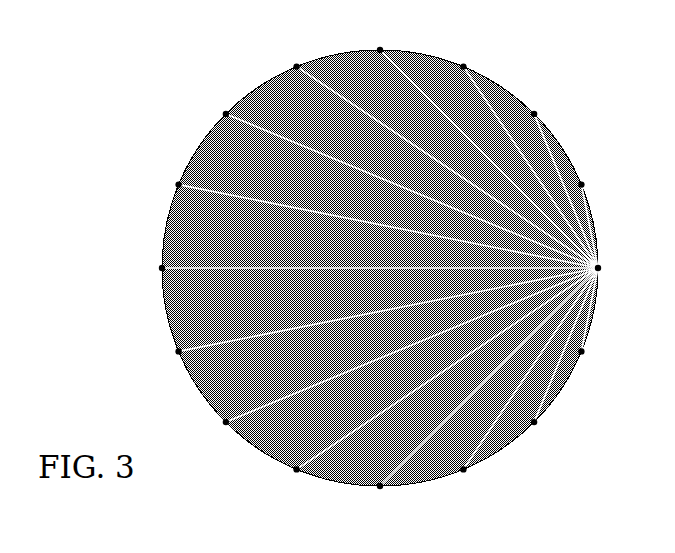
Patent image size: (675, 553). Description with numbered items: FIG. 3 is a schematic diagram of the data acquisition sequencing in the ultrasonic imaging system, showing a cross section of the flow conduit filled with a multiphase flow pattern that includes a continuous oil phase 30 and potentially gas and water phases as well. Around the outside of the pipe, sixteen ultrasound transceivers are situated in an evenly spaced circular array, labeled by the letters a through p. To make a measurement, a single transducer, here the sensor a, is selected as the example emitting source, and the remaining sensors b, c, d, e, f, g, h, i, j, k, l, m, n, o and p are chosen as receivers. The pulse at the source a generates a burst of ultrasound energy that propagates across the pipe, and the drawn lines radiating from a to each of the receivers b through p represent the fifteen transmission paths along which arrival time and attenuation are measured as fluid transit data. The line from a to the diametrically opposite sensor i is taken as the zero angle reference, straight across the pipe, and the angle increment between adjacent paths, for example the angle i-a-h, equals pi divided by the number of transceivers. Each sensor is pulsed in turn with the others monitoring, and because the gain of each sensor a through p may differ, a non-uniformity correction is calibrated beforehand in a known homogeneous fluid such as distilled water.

The continuous oil phase 30 is at (262, 84).
The transceiver 20a a is at (607, 268).
The transceiver 20b b is at (589, 180).
The transceiver 20c c is at (540, 104).
The transceiver 20d d is at (468, 56).
The transceiver 20e e is at (380, 38).
The transceiver 20f f is at (294, 55).
The transceiver 20g g is at (219, 104).
The transceiver 20h h is at (170, 182).
The transceiver 20i i is at (156, 268).
The transceiver 20j j is at (172, 358).
The transceiver 20k k is at (219, 431).
The transceiver 20l l is at (294, 482).
The transceiver 20m m is at (379, 498).
The transceiver 20n n is at (466, 482).
The transceiver 20o o is at (539, 432).
The transceiver 20p p is at (589, 359).